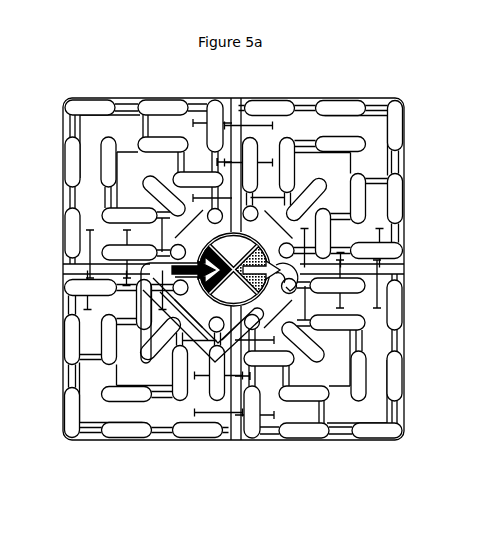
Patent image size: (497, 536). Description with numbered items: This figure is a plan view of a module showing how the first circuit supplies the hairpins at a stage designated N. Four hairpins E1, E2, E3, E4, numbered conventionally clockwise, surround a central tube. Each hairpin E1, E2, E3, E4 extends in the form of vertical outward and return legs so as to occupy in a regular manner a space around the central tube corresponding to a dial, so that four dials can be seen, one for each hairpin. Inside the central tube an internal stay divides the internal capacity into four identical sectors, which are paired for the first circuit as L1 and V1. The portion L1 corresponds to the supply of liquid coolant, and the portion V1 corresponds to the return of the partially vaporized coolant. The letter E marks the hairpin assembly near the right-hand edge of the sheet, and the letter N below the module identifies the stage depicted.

The hairpin E1 is at (127, 143).
The hairpin E2 is at (353, 158).
The hairpin E3 is at (360, 337).
The hairpin E4 is at (108, 356).
The portion of the first circuit for return of partially vaporized coolant V1 is at (196, 266).
The portion of the first circuit for supply of liquid coolant L1 is at (270, 270).
The evaporator E is at (490, 379).
The stage N is at (232, 491).